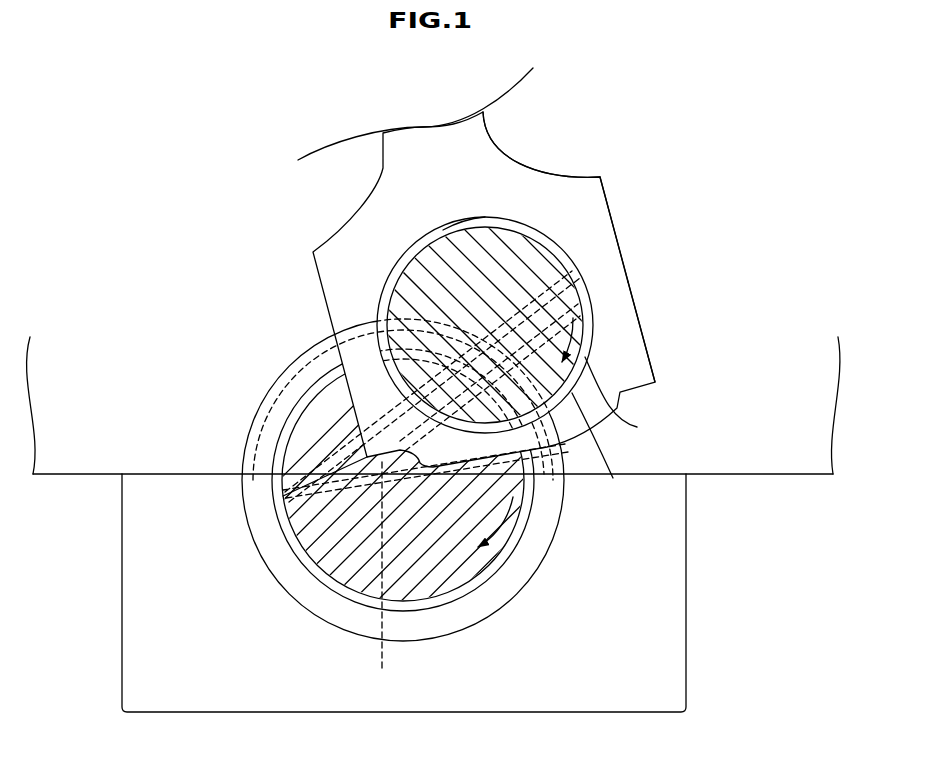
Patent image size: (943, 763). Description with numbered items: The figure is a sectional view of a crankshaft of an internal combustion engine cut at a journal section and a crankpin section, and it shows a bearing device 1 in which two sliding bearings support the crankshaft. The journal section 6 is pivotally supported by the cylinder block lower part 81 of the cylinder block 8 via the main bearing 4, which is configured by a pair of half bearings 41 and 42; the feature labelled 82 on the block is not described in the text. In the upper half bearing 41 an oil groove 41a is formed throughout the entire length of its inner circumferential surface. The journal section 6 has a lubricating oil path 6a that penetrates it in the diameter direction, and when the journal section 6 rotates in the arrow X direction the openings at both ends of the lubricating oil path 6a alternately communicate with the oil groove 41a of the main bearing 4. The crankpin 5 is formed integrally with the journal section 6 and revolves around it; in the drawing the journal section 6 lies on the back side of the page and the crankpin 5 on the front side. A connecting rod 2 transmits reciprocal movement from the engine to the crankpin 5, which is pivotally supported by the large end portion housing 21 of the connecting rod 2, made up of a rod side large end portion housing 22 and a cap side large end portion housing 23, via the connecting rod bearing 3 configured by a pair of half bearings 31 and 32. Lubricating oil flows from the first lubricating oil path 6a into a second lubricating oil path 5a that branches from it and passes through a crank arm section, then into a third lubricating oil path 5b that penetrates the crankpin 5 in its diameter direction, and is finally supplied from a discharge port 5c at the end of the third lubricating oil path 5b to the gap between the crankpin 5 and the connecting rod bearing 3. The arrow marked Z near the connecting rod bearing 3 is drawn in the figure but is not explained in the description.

The bearing device 1 is at (125, 190).
The connecting rod 2 is at (505, 282).
The large end portion housing 21 is at (627, 196).
The rod side large end portion housing 22 is at (620, 248).
The cap side large end portion housing 23 is at (642, 328).
The connecting rod bearing 3 is at (552, 291).
The half bearing 31 is at (443, 230).
The half bearing 32 is at (585, 445).
The main bearing 4 is at (393, 506).
The half bearing 41 is at (248, 417).
The oil groove 41a is at (257, 455).
The half bearing 42 is at (258, 530).
The crankpin 5 is at (508, 252).
The second lubricating oil path 5a is at (258, 375).
The third lubricating oil path 5b is at (505, 318).
The discharge port 5c is at (582, 272).
The journal section 6 is at (327, 563).
The lubricating oil path 6a is at (379, 581).
The cylinder block 8 is at (433, 524).
The cylinder block lower part 81 is at (743, 462).
The base side surface 82 is at (687, 643).
The arrow X direction X is at (500, 527).
The rotation direction Z is at (620, 399).